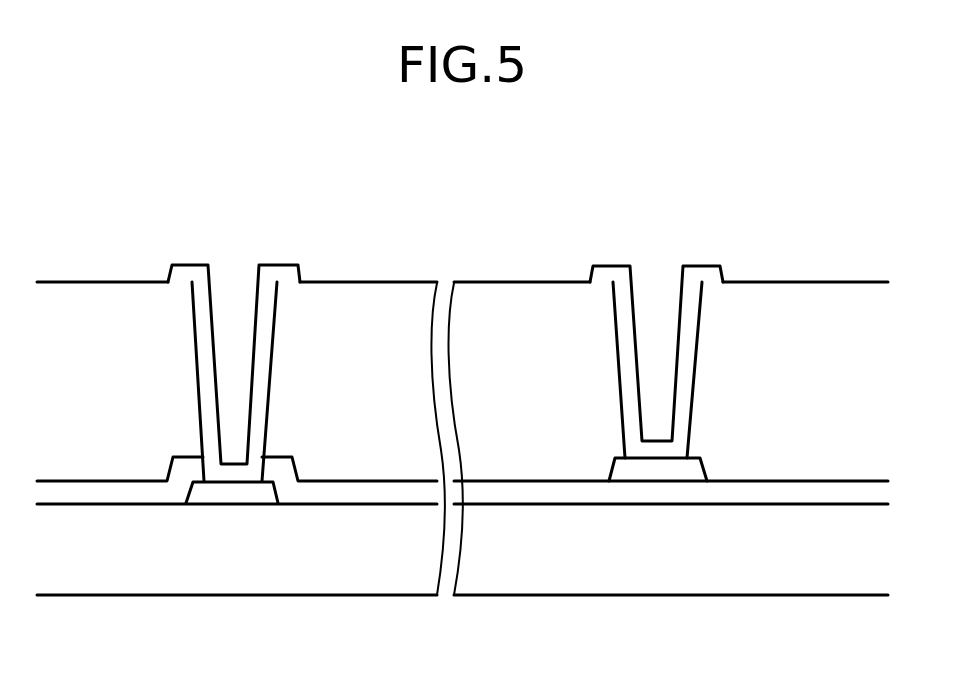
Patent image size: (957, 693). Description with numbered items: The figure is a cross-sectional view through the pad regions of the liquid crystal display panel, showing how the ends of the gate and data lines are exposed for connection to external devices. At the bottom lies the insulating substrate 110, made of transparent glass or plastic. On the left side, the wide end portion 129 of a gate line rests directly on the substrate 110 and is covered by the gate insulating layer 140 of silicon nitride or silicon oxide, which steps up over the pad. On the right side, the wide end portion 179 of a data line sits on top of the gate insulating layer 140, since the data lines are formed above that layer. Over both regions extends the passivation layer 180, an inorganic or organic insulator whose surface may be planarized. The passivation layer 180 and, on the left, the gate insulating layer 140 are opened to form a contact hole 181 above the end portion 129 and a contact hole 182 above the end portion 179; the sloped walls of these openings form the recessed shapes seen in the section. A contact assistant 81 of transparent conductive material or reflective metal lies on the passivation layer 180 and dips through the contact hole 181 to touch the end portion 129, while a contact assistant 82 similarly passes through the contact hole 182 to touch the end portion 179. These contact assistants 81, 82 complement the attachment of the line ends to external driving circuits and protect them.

The insulating substrate 110 is at (758, 557).
The gate insulating layer 140 is at (112, 490).
The end portion of gate line 129 is at (235, 490).
The end portion of data line 179 is at (660, 470).
The passivation layer 180 is at (363, 395).
The contact assistant 81 is at (185, 272).
The contact assistant 82 is at (610, 272).
The contact hole 181 is at (270, 343).
The contact hole 182 is at (693, 343).